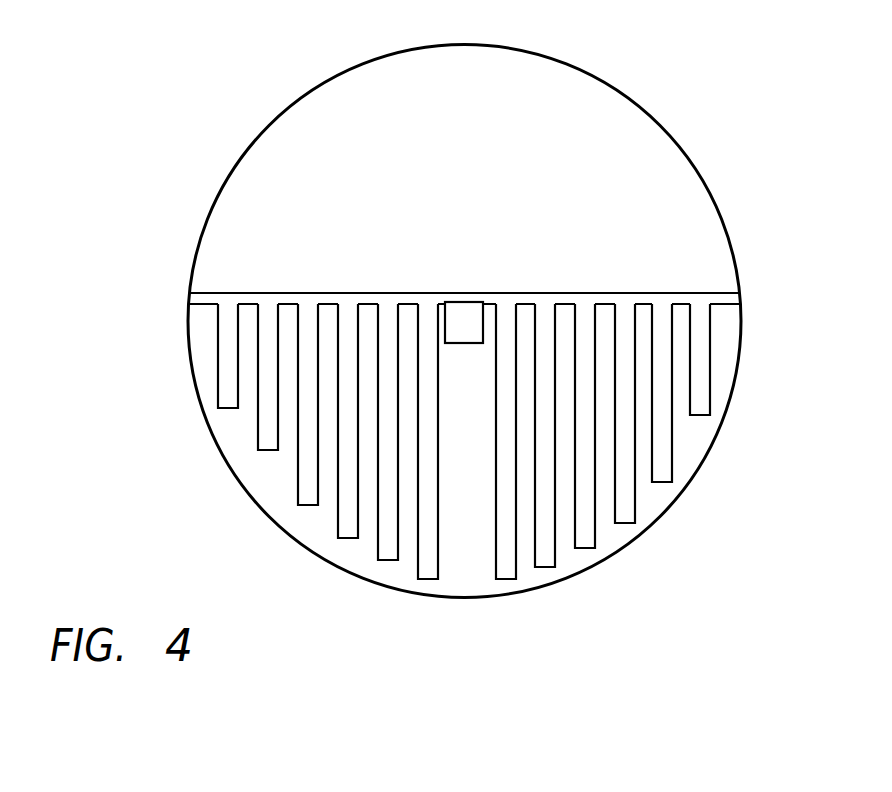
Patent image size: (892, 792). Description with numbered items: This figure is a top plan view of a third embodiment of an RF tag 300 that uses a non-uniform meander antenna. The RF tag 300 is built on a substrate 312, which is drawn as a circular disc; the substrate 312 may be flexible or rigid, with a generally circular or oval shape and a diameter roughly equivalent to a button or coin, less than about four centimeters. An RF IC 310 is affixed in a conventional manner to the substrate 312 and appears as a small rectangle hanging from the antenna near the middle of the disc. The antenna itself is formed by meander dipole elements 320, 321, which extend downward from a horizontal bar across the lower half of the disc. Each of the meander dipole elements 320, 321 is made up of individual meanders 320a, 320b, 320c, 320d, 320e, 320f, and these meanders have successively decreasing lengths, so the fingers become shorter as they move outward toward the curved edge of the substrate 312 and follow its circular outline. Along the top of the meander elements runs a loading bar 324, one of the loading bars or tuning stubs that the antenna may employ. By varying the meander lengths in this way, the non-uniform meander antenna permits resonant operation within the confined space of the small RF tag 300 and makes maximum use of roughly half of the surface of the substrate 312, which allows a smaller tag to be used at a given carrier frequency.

The RF tag 300 is at (209, 102).
The RF IC 310 is at (472, 345).
The substrate 312 is at (270, 500).
The meander dipole element 320 is at (496, 440).
The meander 320a is at (504, 581).
The meander 320b is at (545, 569).
The meander 320c is at (585, 550).
The meander 320d is at (625, 525).
The meander 320e is at (662, 484).
The meander 320f is at (700, 417).
The meander dipole element 321 is at (440, 546).
The loading bar 324 is at (466, 293).